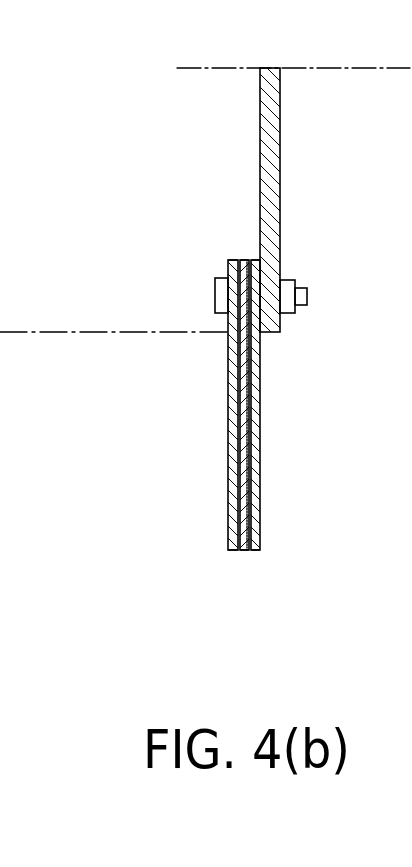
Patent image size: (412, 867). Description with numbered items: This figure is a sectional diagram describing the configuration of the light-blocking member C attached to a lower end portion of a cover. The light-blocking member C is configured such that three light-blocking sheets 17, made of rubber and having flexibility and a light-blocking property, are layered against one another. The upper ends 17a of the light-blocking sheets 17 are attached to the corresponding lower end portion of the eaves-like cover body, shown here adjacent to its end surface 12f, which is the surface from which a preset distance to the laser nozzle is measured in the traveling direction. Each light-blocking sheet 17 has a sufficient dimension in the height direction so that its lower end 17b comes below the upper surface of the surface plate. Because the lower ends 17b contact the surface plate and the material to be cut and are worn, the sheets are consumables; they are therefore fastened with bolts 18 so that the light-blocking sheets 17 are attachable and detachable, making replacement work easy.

The end surface 12f is at (263, 110).
The light-blocking sheet 17 is at (233, 468).
The upper end 17a is at (233, 258).
The lower end 17b is at (233, 552).
The bolt 18 is at (222, 293).
The light-blocking member C is at (153, 352).